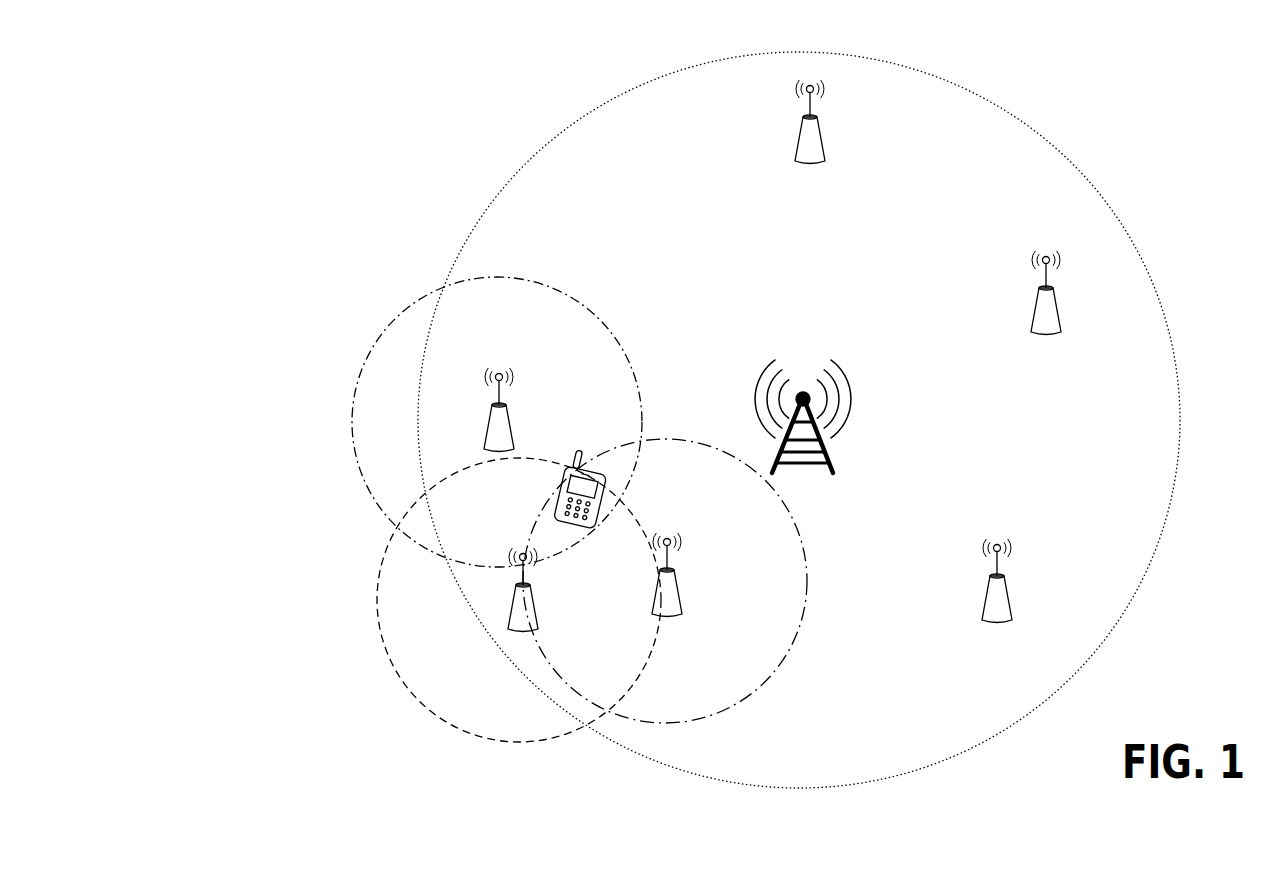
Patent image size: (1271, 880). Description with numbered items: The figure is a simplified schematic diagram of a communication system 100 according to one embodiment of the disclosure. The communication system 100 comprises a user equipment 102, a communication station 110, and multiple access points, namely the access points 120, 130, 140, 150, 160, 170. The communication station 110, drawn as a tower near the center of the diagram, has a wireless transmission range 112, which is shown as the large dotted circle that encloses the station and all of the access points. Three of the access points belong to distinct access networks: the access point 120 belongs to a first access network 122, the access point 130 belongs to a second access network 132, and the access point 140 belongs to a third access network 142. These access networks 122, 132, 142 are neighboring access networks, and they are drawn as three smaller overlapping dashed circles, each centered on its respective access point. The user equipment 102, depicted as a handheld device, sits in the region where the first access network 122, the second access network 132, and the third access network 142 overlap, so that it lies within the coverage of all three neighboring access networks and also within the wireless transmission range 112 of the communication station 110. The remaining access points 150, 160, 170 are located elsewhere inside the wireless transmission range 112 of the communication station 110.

The communication system 100 is at (285, 151).
The user equipment 102 is at (592, 508).
The communication station 110 is at (815, 447).
The wireless transmission range 112 is at (515, 172).
The access point 120 is at (520, 605).
The first access network 122 is at (377, 600).
The access point 130 is at (672, 595).
The second access network 132 is at (808, 582).
The access point 140 is at (503, 425).
The third access network 142 is at (352, 420).
The access point 150 is at (813, 138).
The access point 160 is at (1042, 320).
The access point 170 is at (1002, 605).